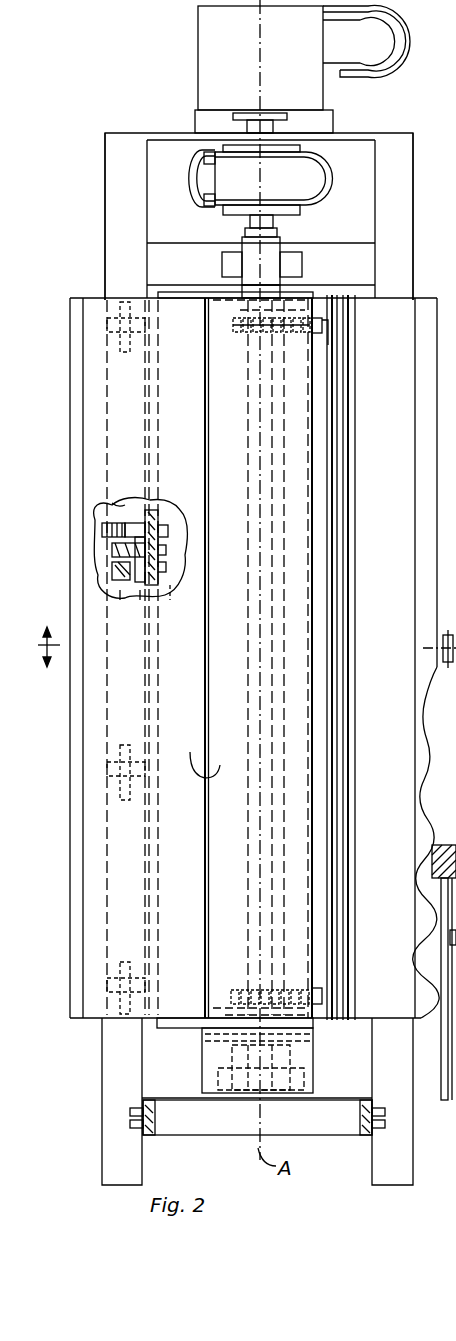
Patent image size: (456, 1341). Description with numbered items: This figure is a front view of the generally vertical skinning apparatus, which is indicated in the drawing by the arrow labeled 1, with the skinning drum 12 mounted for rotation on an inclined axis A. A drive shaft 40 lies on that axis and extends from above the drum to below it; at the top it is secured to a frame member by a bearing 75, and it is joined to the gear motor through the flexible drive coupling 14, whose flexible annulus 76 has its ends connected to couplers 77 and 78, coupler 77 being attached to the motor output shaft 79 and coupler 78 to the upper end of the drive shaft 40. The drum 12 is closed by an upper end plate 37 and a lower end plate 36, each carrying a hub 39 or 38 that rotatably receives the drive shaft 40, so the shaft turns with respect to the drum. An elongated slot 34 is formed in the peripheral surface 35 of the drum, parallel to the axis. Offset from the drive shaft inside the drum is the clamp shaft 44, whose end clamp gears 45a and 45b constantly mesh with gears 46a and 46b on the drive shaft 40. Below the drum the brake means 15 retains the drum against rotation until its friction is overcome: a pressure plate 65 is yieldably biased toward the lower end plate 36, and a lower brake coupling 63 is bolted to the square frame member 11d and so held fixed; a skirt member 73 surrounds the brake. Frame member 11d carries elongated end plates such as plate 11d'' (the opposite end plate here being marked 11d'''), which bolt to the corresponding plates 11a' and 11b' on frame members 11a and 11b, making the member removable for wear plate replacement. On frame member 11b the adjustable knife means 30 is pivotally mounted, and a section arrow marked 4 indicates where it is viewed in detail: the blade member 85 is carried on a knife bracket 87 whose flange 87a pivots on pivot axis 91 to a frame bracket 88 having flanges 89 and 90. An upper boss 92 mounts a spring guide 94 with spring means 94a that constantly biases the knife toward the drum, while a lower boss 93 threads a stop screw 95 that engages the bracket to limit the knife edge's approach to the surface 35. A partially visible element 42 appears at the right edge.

The apparatus 1 is at (406, 40).
The output shaft 79 is at (266, 128).
The frame member 11b is at (84, 216).
The frame member 11a is at (430, 216).
The flexible drive coupling 14 is at (310, 183).
The flexible annulus 76 is at (196, 180).
The coupler 77 is at (202, 152).
The coupler 78 is at (204, 206).
The drive shaft 40 is at (275, 222).
The bearing 75 is at (250, 260).
The upper end plate 37 is at (330, 294).
The elongated slot 34 is at (320, 498).
The skinning drum 12 is at (291, 563).
The gear 46b is at (235, 328).
The hub 39 is at (240, 312).
The clamp gear 45b is at (325, 335).
The clamp shaft 44 is at (283, 380).
The adjustable knife means 30 is at (125, 640).
The spring guide 94 is at (158, 532).
The frame bracket 88 is at (100, 530).
The spring means 94a is at (110, 505).
The boss 92 is at (128, 522).
The flange 89 is at (110, 545).
The flange 90 is at (112, 557).
The stop screw 95 is at (107, 580).
The knife bracket flange 87a is at (160, 550).
The knife bracket 87 is at (160, 568).
The blade member 85 is at (190, 620).
The pivot axis 91 is at (140, 590).
The boss 93 is at (118, 600).
The section line 4 is at (48, 661).
The peripheral surface 35 is at (165, 783).
The side fitting 42 is at (439, 662).
The gear 46a is at (232, 986).
The clamp gear 45a is at (320, 990).
The hub 38 is at (232, 1007).
The lower end plate 36 is at (315, 1026).
The skirt member 73 is at (314, 1080).
The pressure plate 65 is at (205, 1036).
The lower brake coupling 63 is at (228, 1070).
The brake means 15 is at (193, 1058).
The frame member 11d is at (257, 1138).
The elongated plate 11d'' is at (171, 1143).
The cross bar end 11d''' is at (362, 1147).
The elongated plate 11b' is at (101, 1128).
The elongated plate 11a' is at (397, 1094).